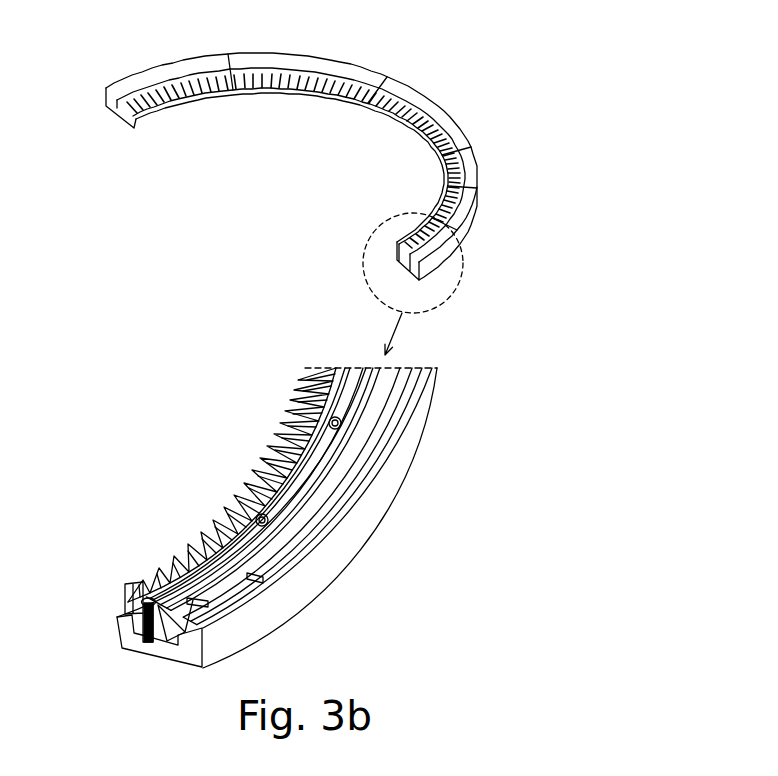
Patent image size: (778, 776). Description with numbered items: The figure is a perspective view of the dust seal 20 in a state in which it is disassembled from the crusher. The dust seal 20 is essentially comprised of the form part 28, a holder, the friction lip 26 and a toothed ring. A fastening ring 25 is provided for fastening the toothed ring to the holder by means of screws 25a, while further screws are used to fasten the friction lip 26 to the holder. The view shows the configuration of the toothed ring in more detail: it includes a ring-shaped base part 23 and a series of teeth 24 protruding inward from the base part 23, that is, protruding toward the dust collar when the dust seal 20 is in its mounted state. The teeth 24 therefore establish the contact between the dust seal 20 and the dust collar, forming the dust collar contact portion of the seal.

The dust seal 20 is at (141, 71).
The base part 23 is at (128, 612).
The teeth 24 is at (213, 532).
The fastening ring 25 is at (313, 467).
The screws 25a is at (345, 425).
The friction lip 26 is at (400, 385).
The form part 28 is at (257, 613).